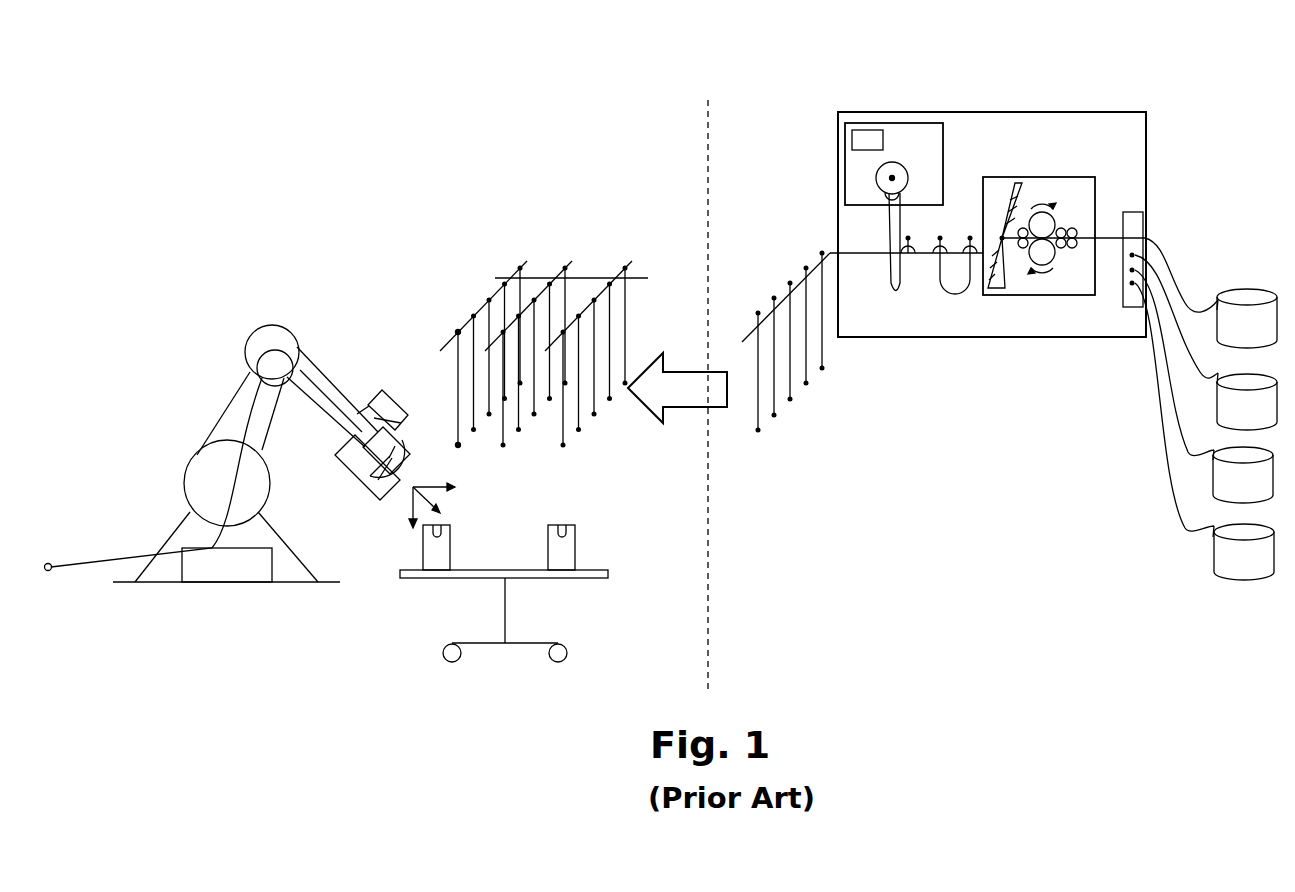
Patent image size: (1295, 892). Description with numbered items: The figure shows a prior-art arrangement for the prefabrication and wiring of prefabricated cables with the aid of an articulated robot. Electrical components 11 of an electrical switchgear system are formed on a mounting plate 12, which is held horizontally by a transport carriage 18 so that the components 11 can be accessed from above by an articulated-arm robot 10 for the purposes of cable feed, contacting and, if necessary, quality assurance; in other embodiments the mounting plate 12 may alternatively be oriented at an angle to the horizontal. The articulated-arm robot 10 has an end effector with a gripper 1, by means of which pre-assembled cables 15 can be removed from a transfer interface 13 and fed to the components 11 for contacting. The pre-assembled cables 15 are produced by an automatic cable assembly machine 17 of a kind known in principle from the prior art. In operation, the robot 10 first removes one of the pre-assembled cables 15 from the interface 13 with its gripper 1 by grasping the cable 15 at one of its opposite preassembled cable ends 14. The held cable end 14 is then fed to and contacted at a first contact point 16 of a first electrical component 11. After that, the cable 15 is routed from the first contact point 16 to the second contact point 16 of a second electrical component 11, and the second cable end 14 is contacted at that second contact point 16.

The gripper 1 is at (370, 476).
The articulated-arm robot 10 is at (200, 350).
The electrical component 11 is at (438, 552).
The mounting plate 12 is at (603, 579).
The transfer interface 13 is at (513, 315).
The cable end 14 is at (456, 331).
The pre-assembled cable 15 is at (434, 386).
The contact point 16 is at (440, 526).
The automatic cable assembly machine 17 is at (1056, 87).
The transport carriage 18 is at (488, 652).